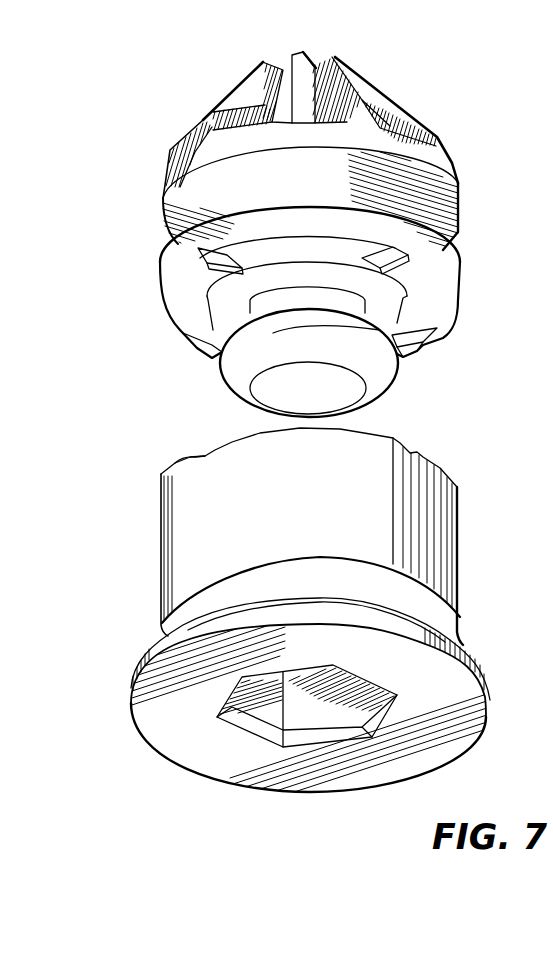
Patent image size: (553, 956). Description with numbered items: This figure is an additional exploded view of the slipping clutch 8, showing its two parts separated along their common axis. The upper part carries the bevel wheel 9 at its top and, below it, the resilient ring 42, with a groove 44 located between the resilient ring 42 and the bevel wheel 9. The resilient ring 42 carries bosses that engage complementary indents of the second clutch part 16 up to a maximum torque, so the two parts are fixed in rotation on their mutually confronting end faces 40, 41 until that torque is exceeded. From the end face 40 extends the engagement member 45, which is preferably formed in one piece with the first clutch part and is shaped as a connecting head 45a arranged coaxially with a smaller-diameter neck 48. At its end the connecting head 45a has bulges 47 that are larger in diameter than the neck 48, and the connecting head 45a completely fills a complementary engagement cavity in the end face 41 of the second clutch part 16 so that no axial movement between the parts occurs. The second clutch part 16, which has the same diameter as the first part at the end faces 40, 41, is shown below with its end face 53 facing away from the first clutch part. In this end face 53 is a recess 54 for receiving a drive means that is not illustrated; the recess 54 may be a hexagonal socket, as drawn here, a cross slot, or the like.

The slipping clutch 8 is at (211, 85).
The bevel wheel 9 is at (392, 112).
The groove 44 is at (205, 193).
The resilient ring 42 is at (180, 306).
The end face 40 is at (193, 332).
The connecting head 45a is at (430, 332).
The neck 48 is at (380, 293).
The bulges 47 is at (228, 352).
The engagement member 45 is at (330, 398).
The end face 41 is at (187, 466).
The second clutch part 16 is at (372, 522).
The end face 53 is at (445, 679).
The recess 54 is at (323, 713).